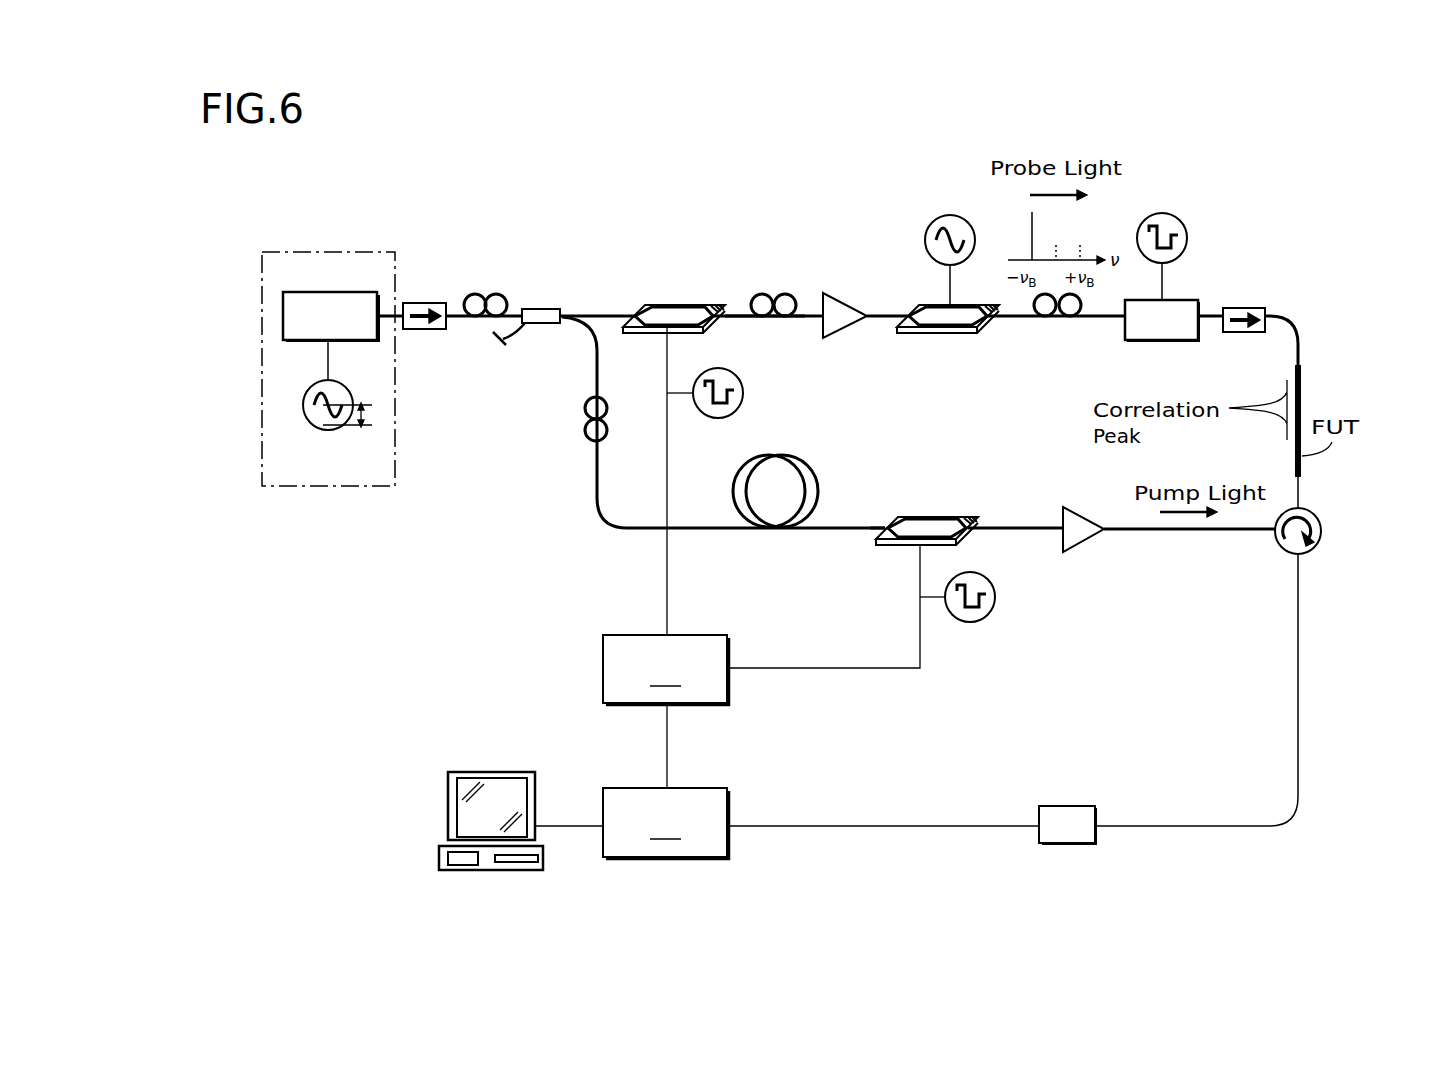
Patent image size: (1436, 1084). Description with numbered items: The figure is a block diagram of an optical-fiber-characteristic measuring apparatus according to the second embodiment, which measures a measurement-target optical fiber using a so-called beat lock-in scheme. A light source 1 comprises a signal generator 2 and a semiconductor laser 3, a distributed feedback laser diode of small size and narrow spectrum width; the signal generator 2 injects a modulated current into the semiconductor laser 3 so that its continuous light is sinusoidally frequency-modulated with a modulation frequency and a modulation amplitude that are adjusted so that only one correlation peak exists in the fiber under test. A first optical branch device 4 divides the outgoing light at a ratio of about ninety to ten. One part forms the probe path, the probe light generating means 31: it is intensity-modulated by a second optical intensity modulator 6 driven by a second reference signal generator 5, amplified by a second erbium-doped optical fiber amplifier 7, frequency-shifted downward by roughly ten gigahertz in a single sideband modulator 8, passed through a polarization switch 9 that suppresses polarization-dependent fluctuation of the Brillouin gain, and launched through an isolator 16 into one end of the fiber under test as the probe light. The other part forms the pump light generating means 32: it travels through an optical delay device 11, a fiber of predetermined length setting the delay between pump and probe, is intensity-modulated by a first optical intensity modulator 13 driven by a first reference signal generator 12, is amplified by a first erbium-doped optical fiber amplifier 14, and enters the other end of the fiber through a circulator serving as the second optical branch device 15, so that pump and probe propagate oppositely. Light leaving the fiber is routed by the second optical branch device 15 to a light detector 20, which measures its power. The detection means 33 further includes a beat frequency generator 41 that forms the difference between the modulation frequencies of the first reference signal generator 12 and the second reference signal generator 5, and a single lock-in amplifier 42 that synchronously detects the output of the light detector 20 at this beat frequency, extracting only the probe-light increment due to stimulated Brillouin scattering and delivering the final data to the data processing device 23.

The light source 1 is at (372, 251).
The signal generator 2 is at (303, 405).
The semiconductor laser 3 is at (283, 325).
The first optical branch device 4 is at (538, 324).
The second reference signal generator 5 is at (705, 407).
The second optical intensity modulator 6 is at (648, 305).
The second erbium-doped optical fiber amplifier 7 is at (858, 304).
The single sideband modulator 8 is at (965, 333).
The polarization switch 9 is at (1187, 298).
The optical delay device 11 is at (790, 482).
The first reference signal generator 12 is at (995, 597).
The first optical intensity modulator 13 is at (933, 514).
The first erbium-doped optical fiber amplifier 14 is at (1087, 542).
The second optical branch device 15 is at (1322, 527).
The isolator 16 is at (1263, 306).
The light detector 20 is at (1069, 843).
The data processing device 23 is at (450, 808).
The probe light generating means 31 is at (757, 258).
The pump light generating means 32 is at (940, 478).
The detection means 33 is at (892, 862).
The beat frequency generator 41 is at (666, 711).
The lock-in amplifier 42 is at (666, 823).